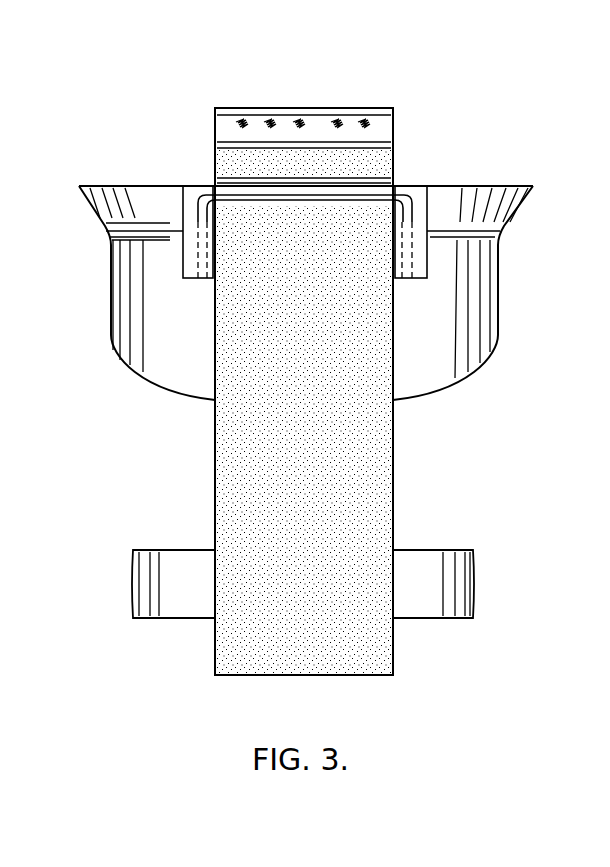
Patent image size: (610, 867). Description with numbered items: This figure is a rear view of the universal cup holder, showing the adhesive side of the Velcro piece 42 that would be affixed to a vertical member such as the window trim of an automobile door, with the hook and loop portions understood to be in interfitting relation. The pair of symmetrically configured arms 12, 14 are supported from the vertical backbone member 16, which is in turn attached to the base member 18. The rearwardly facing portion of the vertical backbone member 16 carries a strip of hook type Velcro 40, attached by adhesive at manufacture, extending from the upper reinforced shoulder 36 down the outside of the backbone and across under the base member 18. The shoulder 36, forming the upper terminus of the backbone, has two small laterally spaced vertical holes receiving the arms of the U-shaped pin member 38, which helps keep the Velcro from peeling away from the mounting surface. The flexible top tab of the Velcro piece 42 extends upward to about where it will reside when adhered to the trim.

The arm 12 is at (490, 315).
The arm 14 is at (123, 317).
The vertical backbone member 16 is at (213, 470).
The base member 18 is at (470, 615).
The upper reinforced shoulder 36 is at (418, 245).
The U-shaped pin member 38 is at (409, 196).
The hook type Velcro strip 40 is at (395, 490).
The Velcro piece 42 is at (347, 122).